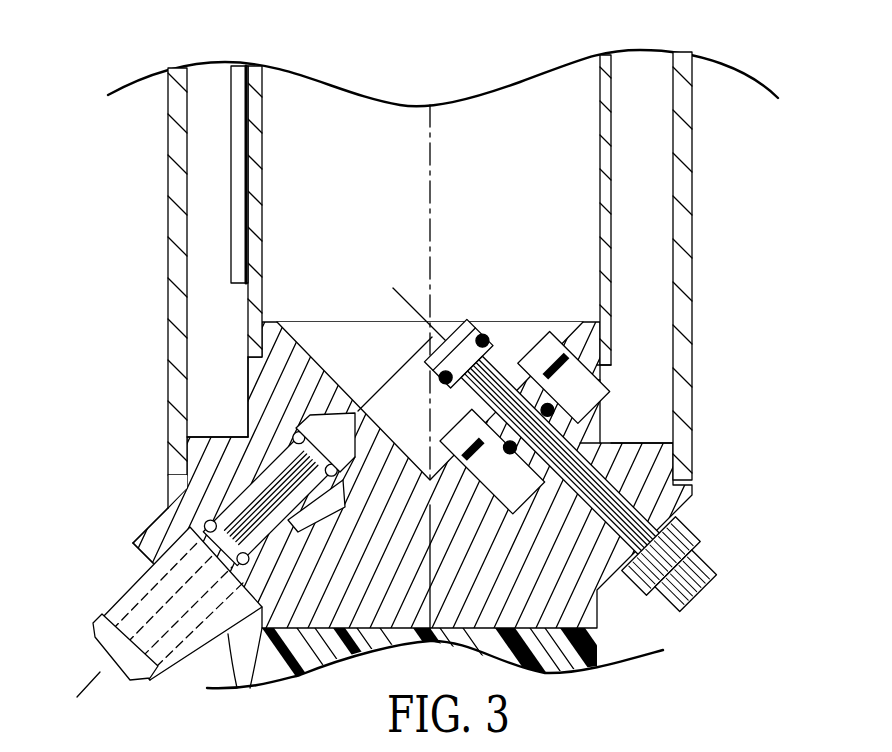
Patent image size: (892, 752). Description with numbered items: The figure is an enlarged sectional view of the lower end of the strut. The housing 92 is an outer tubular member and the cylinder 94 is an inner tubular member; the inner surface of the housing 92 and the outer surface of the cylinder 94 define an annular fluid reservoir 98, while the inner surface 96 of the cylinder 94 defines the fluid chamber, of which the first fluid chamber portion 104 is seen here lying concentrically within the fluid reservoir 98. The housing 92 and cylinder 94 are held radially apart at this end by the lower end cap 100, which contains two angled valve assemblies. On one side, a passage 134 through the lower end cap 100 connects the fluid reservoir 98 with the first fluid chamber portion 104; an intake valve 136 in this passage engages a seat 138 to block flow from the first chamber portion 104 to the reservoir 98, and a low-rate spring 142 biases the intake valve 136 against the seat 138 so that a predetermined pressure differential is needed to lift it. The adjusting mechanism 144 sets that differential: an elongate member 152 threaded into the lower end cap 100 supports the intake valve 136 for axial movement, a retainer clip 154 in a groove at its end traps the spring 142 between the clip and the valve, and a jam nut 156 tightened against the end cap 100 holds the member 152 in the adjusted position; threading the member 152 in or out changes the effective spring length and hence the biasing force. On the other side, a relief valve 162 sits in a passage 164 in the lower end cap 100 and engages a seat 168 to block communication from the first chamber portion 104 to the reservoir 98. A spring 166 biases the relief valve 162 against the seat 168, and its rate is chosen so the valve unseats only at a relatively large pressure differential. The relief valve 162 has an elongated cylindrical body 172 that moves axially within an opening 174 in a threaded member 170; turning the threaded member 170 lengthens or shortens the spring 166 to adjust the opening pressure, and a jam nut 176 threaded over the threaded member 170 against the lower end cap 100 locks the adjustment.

The housing 92 is at (683, 232).
The cylinder 94 is at (601, 58).
The inner surface of the cylinder 96 is at (597, 125).
The fluid reservoir 98 is at (633, 157).
The lower end cap 100 is at (542, 582).
The first fluid chamber portion 104 is at (485, 190).
The passage 134 is at (605, 432).
The intake valve 136 is at (573, 420).
The seat 138 is at (545, 333).
The spring 142 is at (430, 384).
The adjusting mechanism 144 is at (622, 427).
The elongate member 152 is at (687, 580).
The retainer clip 154 is at (472, 333).
The jam nut 156 is at (687, 523).
The relief valve 162 is at (186, 504).
The passage 164 is at (262, 397).
The spring 166 is at (190, 562).
The seat 168 is at (296, 404).
The threaded member 170 is at (105, 632).
The elongated cylindrical body 172 is at (245, 513).
The opening 174 is at (157, 650).
The jam nut 176 is at (235, 665).